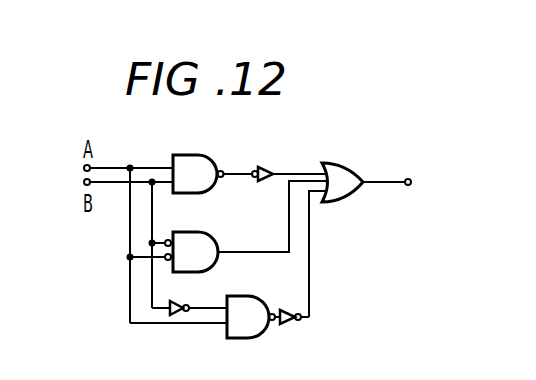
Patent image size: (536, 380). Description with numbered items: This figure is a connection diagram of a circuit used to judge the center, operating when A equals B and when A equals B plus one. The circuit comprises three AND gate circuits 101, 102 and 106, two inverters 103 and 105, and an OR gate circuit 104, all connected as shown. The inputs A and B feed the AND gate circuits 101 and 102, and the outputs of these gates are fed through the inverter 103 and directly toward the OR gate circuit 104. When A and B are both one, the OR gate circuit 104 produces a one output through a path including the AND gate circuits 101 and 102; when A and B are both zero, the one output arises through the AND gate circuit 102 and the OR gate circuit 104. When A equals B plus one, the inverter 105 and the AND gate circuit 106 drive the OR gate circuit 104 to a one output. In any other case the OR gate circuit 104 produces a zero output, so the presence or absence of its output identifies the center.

The AND gate circuit 101 is at (198, 157).
The AND gate circuit 102 is at (191, 235).
The inverter 103 is at (264, 157).
The OR gate circuit 104 is at (337, 168).
The inverter 105 is at (194, 292).
The AND gate circuit 106 is at (264, 301).